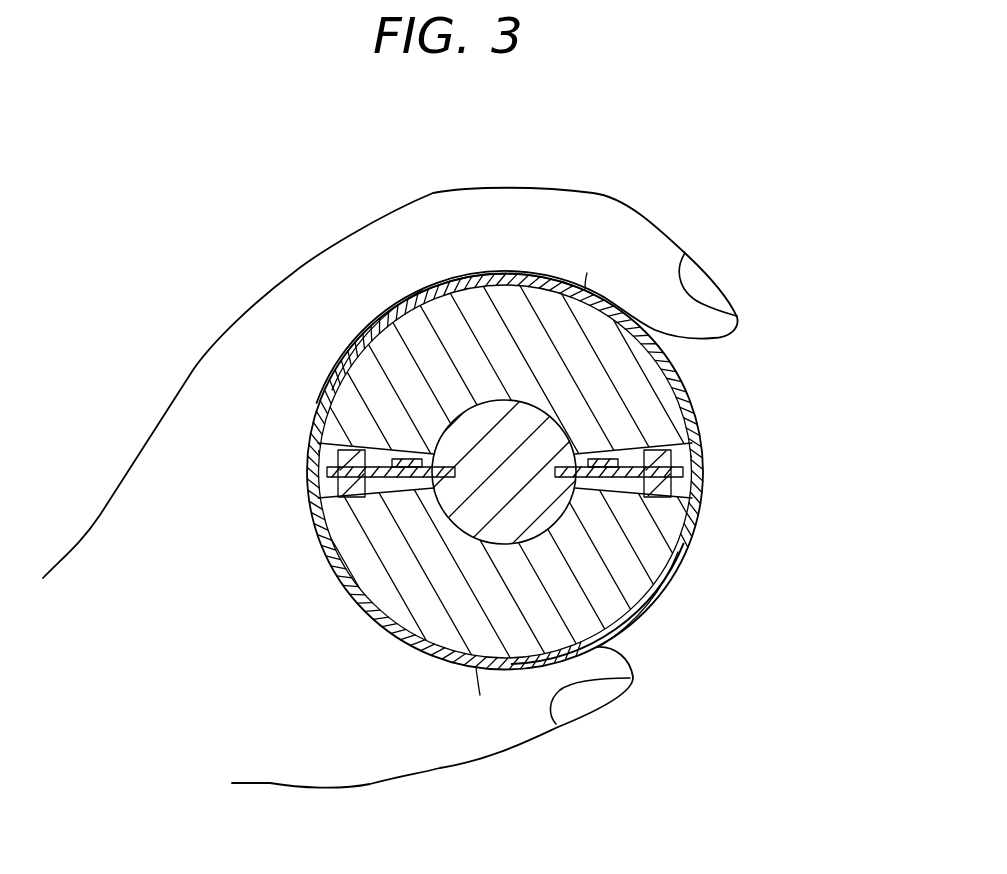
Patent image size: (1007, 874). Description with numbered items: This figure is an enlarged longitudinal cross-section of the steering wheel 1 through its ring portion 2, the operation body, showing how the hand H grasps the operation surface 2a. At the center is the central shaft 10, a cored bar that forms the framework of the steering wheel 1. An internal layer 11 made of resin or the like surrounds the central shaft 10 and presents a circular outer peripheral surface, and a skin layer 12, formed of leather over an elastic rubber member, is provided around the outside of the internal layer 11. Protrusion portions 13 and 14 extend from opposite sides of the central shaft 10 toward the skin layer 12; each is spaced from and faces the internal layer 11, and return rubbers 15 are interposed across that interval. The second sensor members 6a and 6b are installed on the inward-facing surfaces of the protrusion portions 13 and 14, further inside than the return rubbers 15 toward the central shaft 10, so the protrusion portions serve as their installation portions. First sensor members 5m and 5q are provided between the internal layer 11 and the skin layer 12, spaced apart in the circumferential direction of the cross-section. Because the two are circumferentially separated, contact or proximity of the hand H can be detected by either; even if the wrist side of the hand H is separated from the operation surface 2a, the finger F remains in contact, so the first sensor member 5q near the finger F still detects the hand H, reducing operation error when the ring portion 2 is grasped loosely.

The device 1 is at (710, 203).
The ring portion 2 is at (722, 450).
The operation surface 2a is at (656, 596).
The first sensor member 5m is at (431, 288).
The first sensor member 5q is at (631, 586).
The second sensor member 6a is at (619, 538).
The second sensor member 6b is at (350, 353).
The central shaft 10 is at (538, 423).
The internal layer 11 is at (633, 368).
The skin layer 12 is at (699, 434).
The protrusion portion 13 is at (605, 503).
The protrusion portion 14 is at (378, 452).
The return rubber 15 is at (338, 490).
The hand H is at (163, 525).
The finger F is at (467, 728).